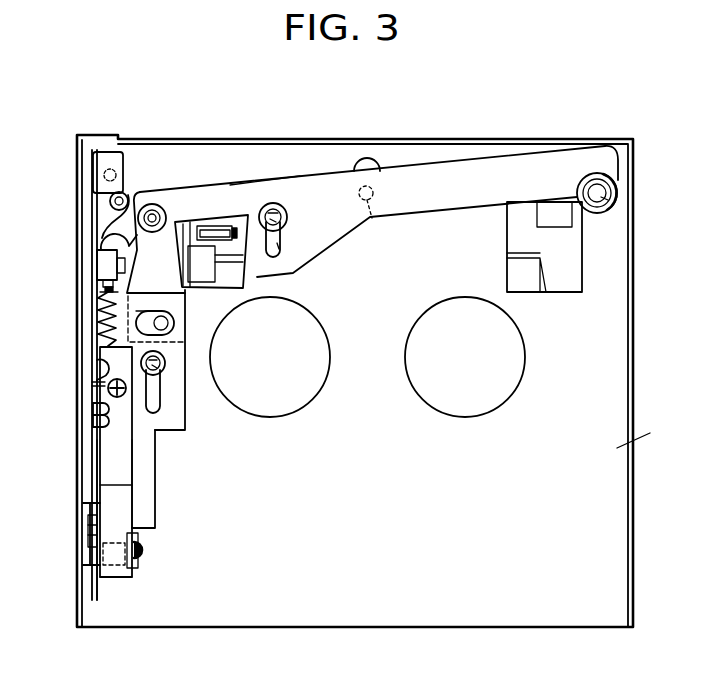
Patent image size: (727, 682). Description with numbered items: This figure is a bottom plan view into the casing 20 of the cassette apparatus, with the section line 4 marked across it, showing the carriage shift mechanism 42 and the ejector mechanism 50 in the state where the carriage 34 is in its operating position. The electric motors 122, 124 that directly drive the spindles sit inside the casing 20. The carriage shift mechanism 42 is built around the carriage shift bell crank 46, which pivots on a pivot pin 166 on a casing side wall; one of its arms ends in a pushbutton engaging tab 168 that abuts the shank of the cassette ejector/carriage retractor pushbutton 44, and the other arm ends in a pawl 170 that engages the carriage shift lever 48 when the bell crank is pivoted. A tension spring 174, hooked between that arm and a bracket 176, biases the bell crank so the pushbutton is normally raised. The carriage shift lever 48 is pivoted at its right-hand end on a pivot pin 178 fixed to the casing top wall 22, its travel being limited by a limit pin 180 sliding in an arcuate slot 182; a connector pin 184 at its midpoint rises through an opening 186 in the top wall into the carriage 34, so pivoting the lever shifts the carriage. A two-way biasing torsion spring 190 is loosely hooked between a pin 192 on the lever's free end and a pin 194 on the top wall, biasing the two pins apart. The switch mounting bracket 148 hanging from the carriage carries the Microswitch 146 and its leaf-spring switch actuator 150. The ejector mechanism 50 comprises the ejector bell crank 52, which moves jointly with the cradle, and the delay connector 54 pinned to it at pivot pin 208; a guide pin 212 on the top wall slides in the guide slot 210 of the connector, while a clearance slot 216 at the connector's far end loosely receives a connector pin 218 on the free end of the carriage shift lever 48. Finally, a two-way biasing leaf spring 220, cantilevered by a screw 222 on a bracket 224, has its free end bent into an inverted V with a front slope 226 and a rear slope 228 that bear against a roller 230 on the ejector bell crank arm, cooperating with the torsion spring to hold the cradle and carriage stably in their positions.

The section line 4- 4 is at (185, 100).
The casing 20 is at (634, 391).
The casing top wall 22 is at (647, 430).
The carriage 34 is at (575, 262).
The carriage shift mechanism 42 is at (180, 178).
The cassette ejector/carriage retractor pushbutton 44 is at (110, 169).
The carriage shift bell crank 46 is at (95, 203).
The carriage shift lever 48 is at (432, 190).
The ejector mechanism 50 is at (162, 506).
The ejector bell crank 52 is at (95, 512).
The delay connector 54 is at (150, 470).
The electric motor 122 is at (293, 398).
The electric motor 124 is at (435, 390).
The Microswitch 146 is at (207, 274).
The switch mounting bracket 148 is at (211, 241).
The switch actuator 150 is at (215, 230).
The pivot pin 166 is at (97, 265).
The pushbutton engaging tab 168 is at (95, 171).
The pawl 170 is at (103, 296).
The tension spring 174 is at (96, 327).
The bracket 176 is at (95, 429).
The pivot pin 178 is at (618, 195).
The limit pin 180 is at (274, 202).
The arcuate slot 182 is at (280, 252).
The connector pin 184 is at (372, 221).
The opening 186 is at (367, 158).
The two-way biasing torsion spring 190 is at (110, 224).
The pin 192 is at (156, 204).
The pin 194 is at (121, 192).
The pivot pin 208 is at (143, 551).
The guide slot 210 is at (158, 398).
The guide pin 212 is at (165, 372).
The clearance slot 216 is at (149, 309).
The connector pin 218 is at (172, 321).
The two-way biasing leaf spring 220 is at (94, 462).
The screw 222 is at (102, 394).
The bracket 224 is at (96, 366).
The front slope 226 is at (120, 579).
The rear slope 228 is at (108, 528).
The roller 230 is at (115, 556).